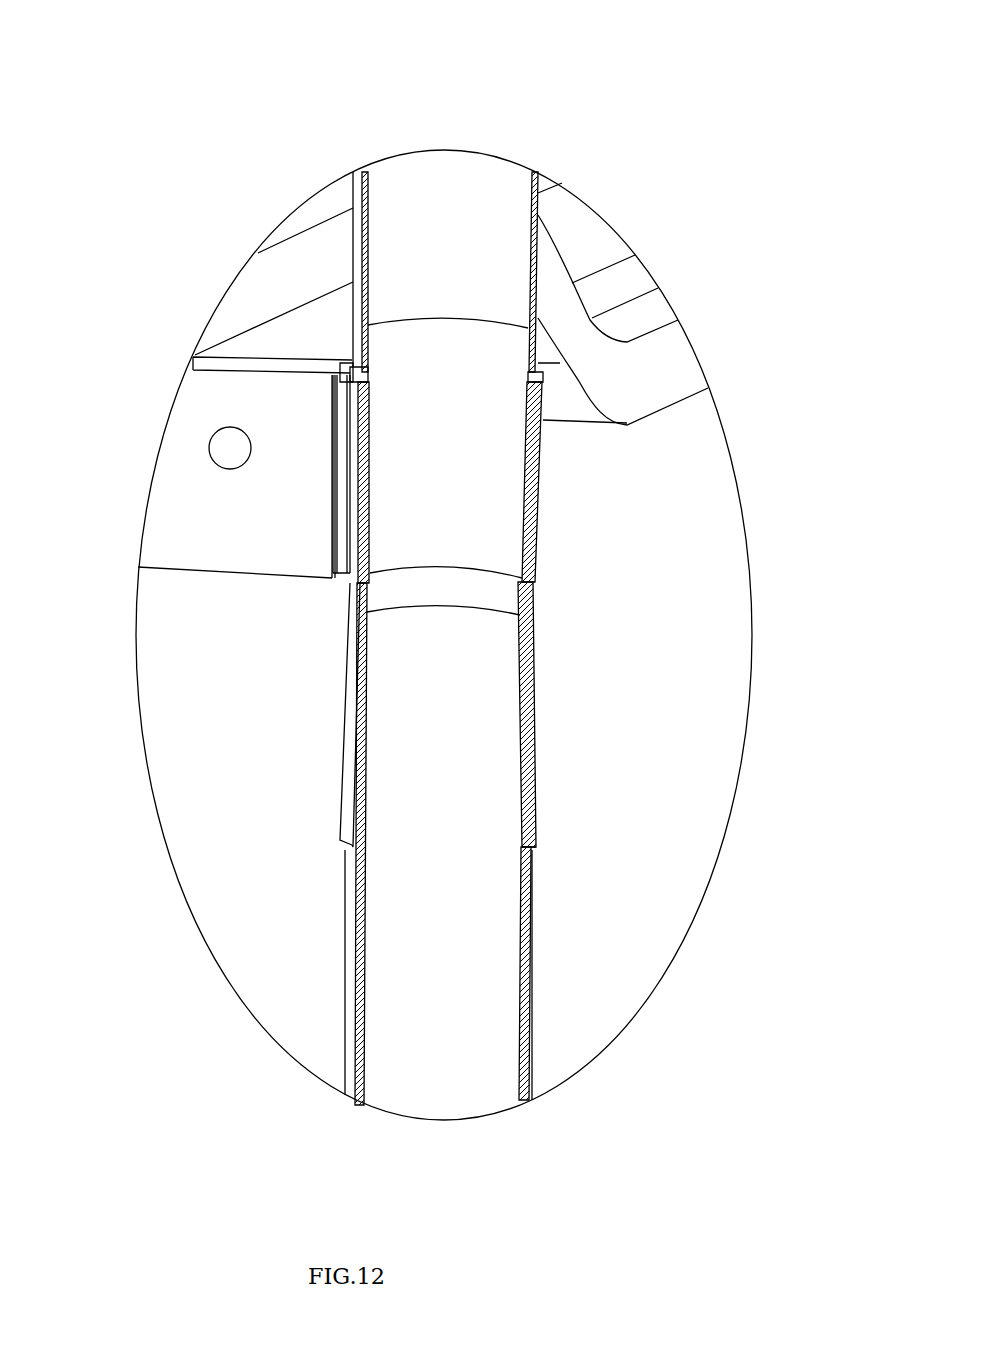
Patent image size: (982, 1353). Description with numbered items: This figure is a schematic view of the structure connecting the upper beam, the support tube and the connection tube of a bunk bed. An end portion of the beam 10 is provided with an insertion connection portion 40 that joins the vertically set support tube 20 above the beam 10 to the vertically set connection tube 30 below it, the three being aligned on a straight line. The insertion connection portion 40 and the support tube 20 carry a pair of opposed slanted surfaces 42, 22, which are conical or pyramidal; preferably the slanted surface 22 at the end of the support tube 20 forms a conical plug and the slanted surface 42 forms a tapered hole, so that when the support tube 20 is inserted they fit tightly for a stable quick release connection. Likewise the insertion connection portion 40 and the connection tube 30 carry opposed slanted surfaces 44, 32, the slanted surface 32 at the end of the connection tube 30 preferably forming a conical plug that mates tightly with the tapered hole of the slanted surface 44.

The beam 10 is at (183, 500).
The support tube 20 is at (455, 187).
The slanted surface 22 is at (360, 353).
The connection tube 30 is at (473, 1060).
The slanted surface 32 is at (353, 857).
The insertion connection portion 40 is at (533, 598).
The slanted surface 42 is at (537, 488).
The slanted surface 44 is at (537, 722).